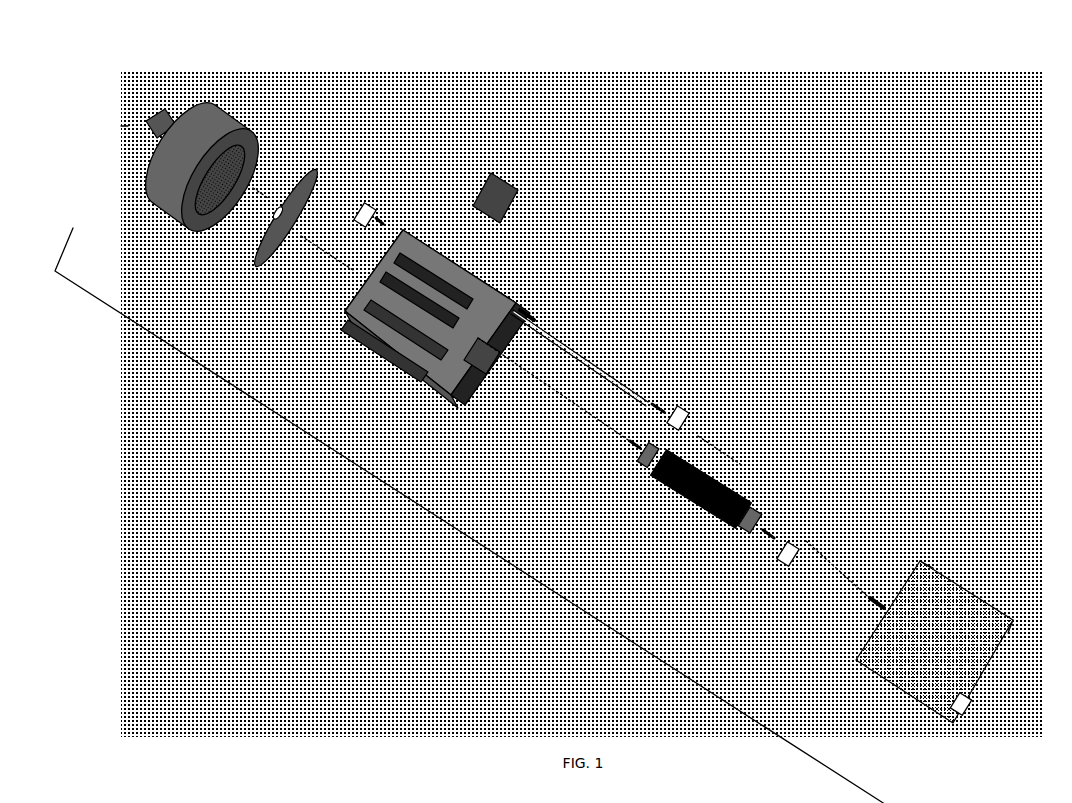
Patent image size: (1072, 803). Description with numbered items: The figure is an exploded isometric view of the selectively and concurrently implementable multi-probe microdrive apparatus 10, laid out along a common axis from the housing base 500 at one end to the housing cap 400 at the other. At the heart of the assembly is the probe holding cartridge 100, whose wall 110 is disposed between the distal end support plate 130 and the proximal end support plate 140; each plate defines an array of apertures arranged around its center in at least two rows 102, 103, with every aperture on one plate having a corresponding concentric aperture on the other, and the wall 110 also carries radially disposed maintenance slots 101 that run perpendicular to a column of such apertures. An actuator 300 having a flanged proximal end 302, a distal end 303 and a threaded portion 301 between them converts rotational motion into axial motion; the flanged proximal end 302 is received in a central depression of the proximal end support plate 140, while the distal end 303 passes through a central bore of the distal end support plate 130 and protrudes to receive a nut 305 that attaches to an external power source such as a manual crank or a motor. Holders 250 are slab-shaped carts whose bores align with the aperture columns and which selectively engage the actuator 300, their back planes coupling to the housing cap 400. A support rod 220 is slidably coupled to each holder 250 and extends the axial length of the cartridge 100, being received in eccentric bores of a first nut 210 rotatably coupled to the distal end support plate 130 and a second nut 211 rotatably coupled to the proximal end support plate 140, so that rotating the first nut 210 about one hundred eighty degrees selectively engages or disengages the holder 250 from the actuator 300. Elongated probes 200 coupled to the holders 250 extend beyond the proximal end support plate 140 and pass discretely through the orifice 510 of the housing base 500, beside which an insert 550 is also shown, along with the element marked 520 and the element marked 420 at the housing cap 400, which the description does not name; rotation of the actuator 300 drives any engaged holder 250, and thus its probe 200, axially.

The multi-probe microdrive apparatus 10 is at (742, 222).
The probe holding cartridge 100 is at (407, 302).
The maintenance slot 101 is at (358, 345).
The aperture row 102 is at (445, 387).
The aperture row 103 is at (467, 352).
The wall 110 is at (490, 278).
The distal end support plate 130 is at (520, 307).
The proximal end support plate 140 is at (330, 298).
The probe 200 is at (532, 352).
The first nut 210 is at (682, 406).
The second nut 211 is at (347, 200).
The support rod 220 is at (572, 352).
The holder 250 is at (514, 208).
The actuator 300 is at (690, 515).
The threaded portion 301 is at (668, 493).
The flanged proximal end 302 is at (647, 468).
The distal end 303 is at (728, 517).
The nut 305 is at (782, 548).
The housing cap 400 is at (935, 644).
The housing connector 420 is at (952, 698).
The housing base 500 is at (218, 102).
The orifice 510 is at (141, 118).
The cable 520 is at (113, 118).
The insert 550 is at (238, 210).